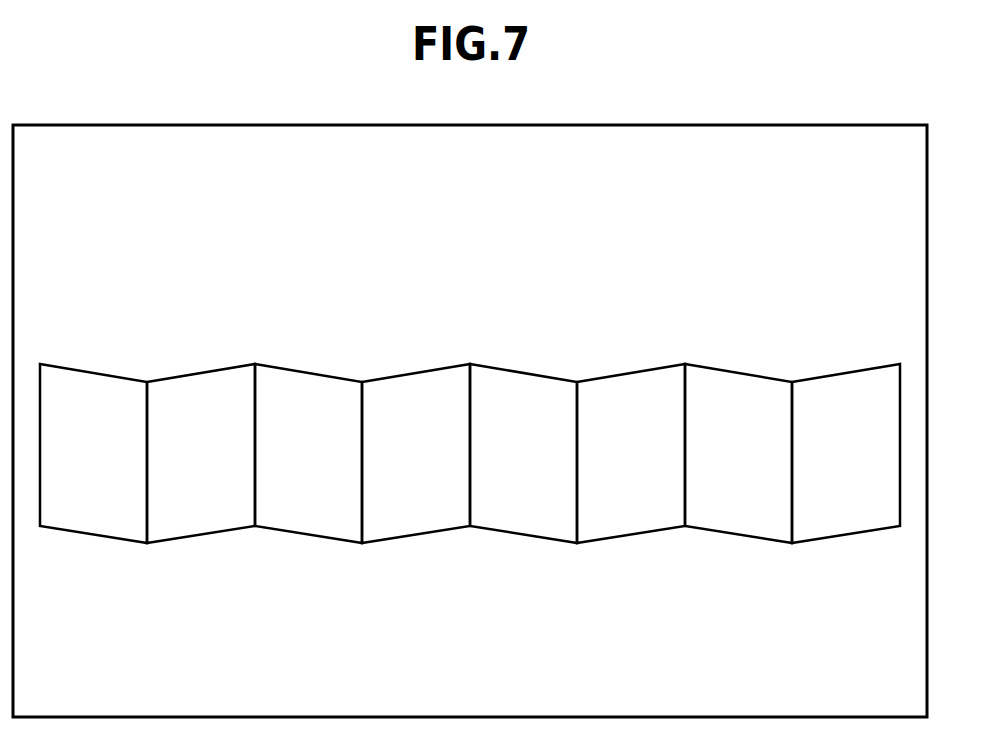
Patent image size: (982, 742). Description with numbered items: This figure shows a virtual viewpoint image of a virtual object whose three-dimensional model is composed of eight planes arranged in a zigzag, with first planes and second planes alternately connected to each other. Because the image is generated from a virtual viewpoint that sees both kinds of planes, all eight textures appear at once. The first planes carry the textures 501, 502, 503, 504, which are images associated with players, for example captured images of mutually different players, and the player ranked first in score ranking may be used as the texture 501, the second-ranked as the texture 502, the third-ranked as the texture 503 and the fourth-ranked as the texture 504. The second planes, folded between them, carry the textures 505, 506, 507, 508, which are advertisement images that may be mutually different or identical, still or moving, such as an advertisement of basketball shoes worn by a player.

The texture 501 is at (97, 372).
The texture 502 is at (312, 372).
The texture 503 is at (531, 372).
The texture 504 is at (745, 372).
The texture 505 is at (197, 372).
The texture 506 is at (412, 372).
The texture 507 is at (628, 372).
The texture 508 is at (847, 372).